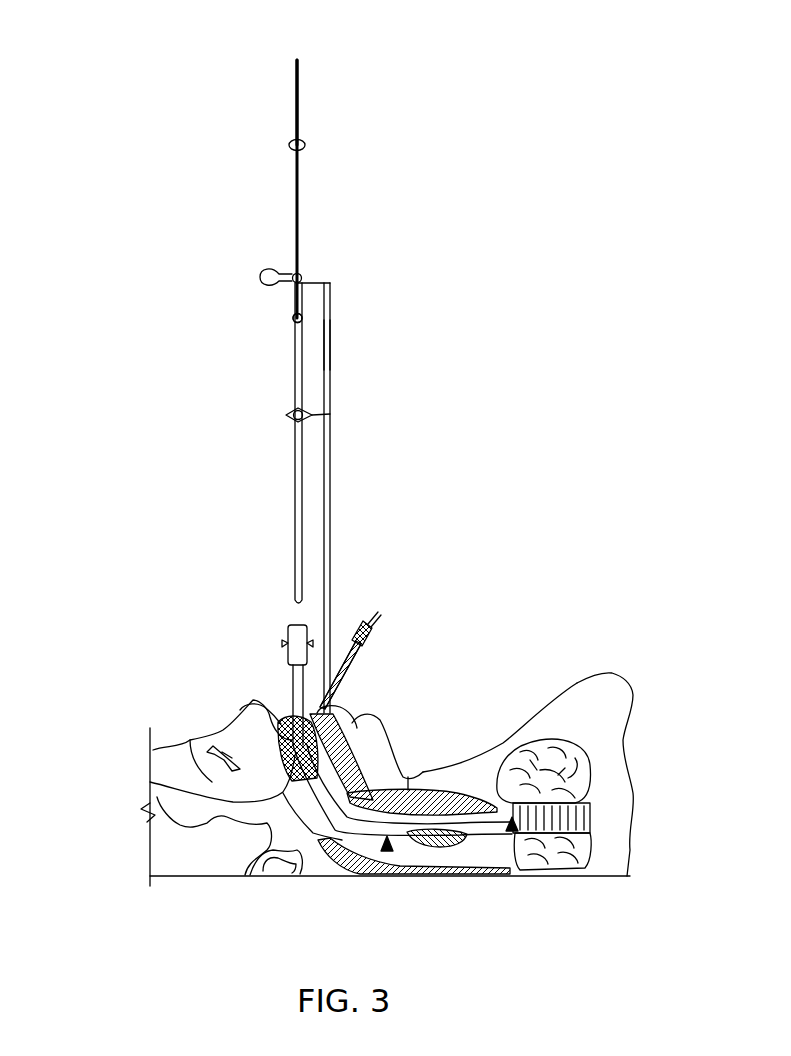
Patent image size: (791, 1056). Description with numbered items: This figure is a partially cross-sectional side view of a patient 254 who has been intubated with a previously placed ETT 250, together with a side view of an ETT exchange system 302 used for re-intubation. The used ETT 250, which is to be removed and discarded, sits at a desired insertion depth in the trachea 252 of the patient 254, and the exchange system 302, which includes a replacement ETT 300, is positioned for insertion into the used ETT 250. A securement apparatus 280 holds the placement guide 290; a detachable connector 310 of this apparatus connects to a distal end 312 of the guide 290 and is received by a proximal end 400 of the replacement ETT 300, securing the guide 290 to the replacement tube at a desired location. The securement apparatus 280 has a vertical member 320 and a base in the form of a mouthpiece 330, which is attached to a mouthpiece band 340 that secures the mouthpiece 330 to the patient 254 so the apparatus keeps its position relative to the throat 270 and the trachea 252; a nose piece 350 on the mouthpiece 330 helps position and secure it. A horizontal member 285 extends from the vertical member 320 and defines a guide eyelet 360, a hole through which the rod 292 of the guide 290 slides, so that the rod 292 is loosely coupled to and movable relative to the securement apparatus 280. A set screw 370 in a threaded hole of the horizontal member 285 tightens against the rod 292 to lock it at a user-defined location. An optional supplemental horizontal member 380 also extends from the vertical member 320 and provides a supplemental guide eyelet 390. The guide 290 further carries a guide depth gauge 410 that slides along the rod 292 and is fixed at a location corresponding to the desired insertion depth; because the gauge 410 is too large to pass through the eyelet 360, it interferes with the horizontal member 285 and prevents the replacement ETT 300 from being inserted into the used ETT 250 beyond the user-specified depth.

The ETT exchange system 302 is at (158, 129).
The guide depth gauge 410 is at (306, 145).
The rod 292 is at (300, 186).
The placement guide 290 is at (300, 233).
The set screw 370 is at (262, 272).
The guide eyelet 360 is at (302, 275).
The horizontal member 285 is at (330, 284).
The distal end 312 is at (292, 313).
The proximal end 400 is at (303, 318).
The detachable connector 310 is at (292, 320).
The vertical member 320 is at (332, 346).
The supplemental guide eyelet 390 is at (288, 415).
The supplemental horizontal member 380 is at (330, 414).
The replacement ETT 300 is at (294, 470).
The securement apparatus 280 is at (331, 470).
The patient 254 is at (577, 680).
The nose piece 350 is at (250, 715).
The mouthpiece 330 is at (280, 730).
The previously placed ETT 250 is at (427, 770).
The mouthpiece band 340 is at (150, 782).
The throat 270 is at (388, 851).
The trachea 252 is at (512, 831).